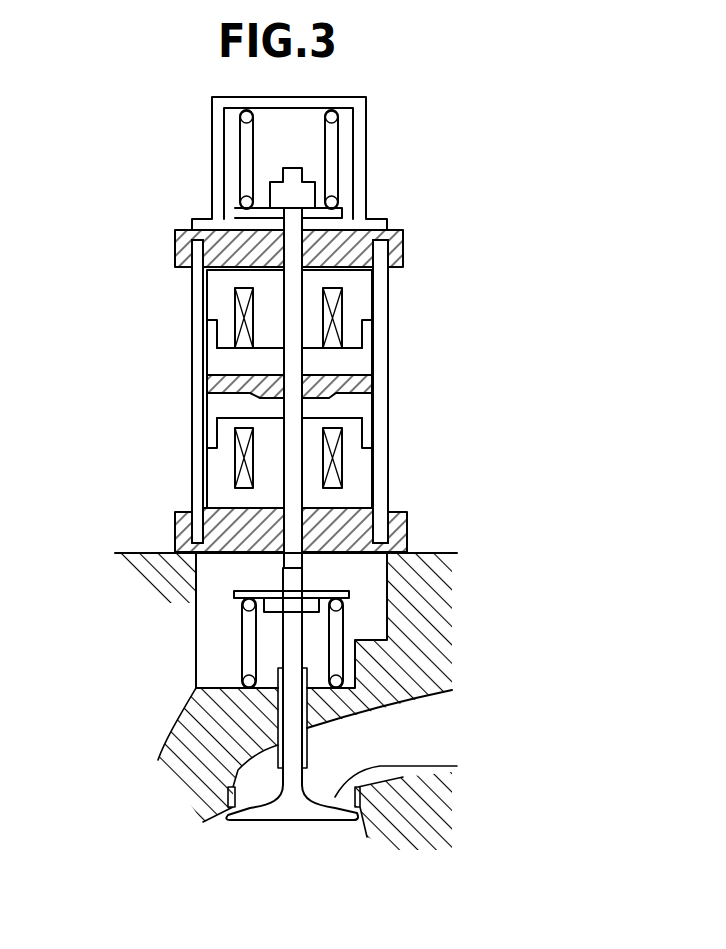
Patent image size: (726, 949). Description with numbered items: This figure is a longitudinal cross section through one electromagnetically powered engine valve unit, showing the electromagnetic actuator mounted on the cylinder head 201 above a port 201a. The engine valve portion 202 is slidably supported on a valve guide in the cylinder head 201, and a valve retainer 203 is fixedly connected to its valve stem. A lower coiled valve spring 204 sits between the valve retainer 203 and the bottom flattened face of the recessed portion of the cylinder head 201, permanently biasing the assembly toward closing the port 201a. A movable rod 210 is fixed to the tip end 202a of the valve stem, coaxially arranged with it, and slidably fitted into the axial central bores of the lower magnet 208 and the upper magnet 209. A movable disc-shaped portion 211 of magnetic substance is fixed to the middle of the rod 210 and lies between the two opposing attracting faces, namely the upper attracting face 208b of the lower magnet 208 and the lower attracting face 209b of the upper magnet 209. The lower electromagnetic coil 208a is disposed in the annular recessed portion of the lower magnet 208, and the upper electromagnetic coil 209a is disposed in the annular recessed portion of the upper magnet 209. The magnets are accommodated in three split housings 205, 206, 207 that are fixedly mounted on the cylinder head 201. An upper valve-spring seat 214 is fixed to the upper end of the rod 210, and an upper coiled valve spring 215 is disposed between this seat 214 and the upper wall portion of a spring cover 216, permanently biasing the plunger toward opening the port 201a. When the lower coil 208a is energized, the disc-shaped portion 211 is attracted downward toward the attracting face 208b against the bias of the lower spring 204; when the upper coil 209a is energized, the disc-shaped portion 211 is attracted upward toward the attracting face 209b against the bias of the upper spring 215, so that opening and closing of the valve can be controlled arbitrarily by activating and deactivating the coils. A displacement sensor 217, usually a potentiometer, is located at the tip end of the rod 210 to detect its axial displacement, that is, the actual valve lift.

The cylinder head 201 is at (420, 618).
The port 201a is at (457, 766).
The engine valve portion 202 is at (305, 808).
The tip end of the valve stem 202a is at (288, 567).
The valve retainer 203 is at (235, 593).
The lower coiled valve spring 204 is at (343, 652).
The housing 205 is at (383, 500).
The housing 206 is at (397, 535).
The housing 207 is at (404, 243).
The lower magnet 208 is at (358, 470).
The lower electromagnetic coil 208a is at (240, 459).
The upper attracting face of the lower magnet 208b is at (310, 422).
The upper magnet 209 is at (358, 292).
The upper electromagnetic coil 209a is at (237, 315).
The lower attracting face of the upper magnet 209b is at (257, 357).
The movable rod 210 is at (293, 242).
The movable disc-shaped portion 211 is at (212, 382).
The upper valve-spring seat 214 is at (333, 212).
The upper coiled valve spring 215 is at (243, 151).
The spring cover 216 is at (357, 123).
The displacement sensor 217 is at (300, 193).